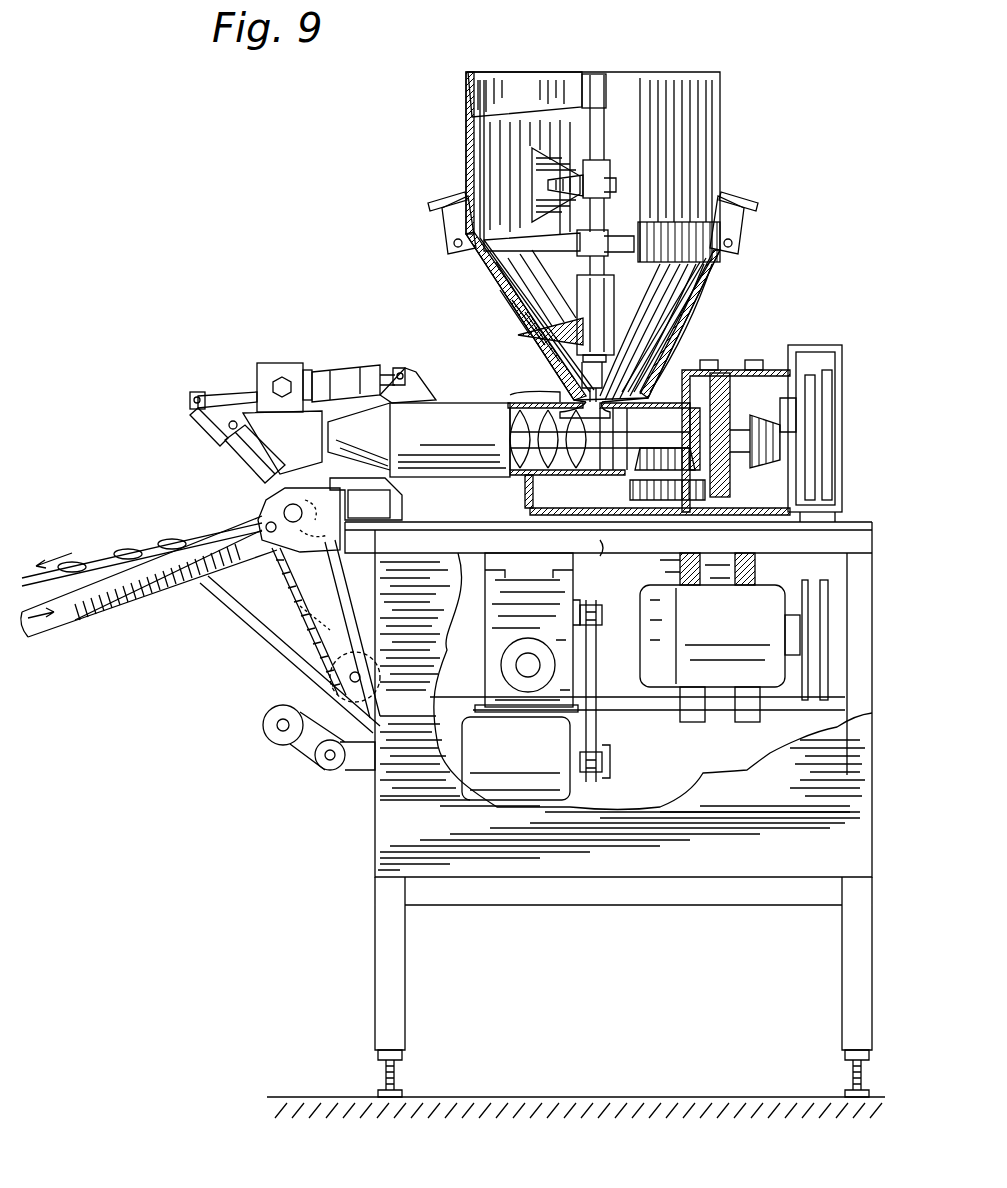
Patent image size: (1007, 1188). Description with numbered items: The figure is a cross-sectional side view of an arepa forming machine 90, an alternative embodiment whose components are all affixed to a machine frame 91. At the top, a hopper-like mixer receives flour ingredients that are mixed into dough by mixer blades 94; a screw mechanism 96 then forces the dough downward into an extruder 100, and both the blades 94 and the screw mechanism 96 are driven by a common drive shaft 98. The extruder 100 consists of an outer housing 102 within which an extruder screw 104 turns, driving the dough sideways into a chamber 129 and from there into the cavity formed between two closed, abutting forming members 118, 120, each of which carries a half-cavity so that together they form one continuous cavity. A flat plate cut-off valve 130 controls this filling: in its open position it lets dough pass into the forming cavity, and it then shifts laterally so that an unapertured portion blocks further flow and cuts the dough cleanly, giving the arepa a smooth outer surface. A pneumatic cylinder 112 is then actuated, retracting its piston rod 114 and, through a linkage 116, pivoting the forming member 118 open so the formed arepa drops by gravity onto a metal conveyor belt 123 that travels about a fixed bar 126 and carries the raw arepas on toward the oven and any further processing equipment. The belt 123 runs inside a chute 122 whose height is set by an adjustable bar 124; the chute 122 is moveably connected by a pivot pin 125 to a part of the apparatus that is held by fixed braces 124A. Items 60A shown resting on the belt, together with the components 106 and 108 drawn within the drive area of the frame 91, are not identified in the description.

The dough product 60A is at (130, 550).
The arepa forming machine 90 is at (783, 311).
The machine frame 91 is at (858, 548).
The mixer blades 94 is at (606, 186).
The screw mechanism 96 is at (616, 300).
The drive shaft 98 is at (576, 392).
The extruder 100 is at (480, 387).
The outer housing 102 is at (528, 404).
The extruder screw 104 is at (508, 432).
The motor 106 is at (722, 672).
The drive housing 108 is at (818, 478).
The pneumatic cylinder 112 is at (338, 372).
The piston rod 114 is at (238, 392).
The linkage 116 is at (190, 400).
The forming member 118 is at (246, 458).
The forming member 120 is at (216, 440).
The chute 122 is at (132, 603).
The metal conveyor belt 123 is at (94, 563).
The adjustable bar 124 is at (250, 622).
The fixed braces 124A is at (300, 612).
The pivot pin 125 is at (253, 533).
The fixed bar 126 is at (312, 548).
The chamber 129 is at (376, 424).
The flat plate cut-off valve 130 is at (246, 456).